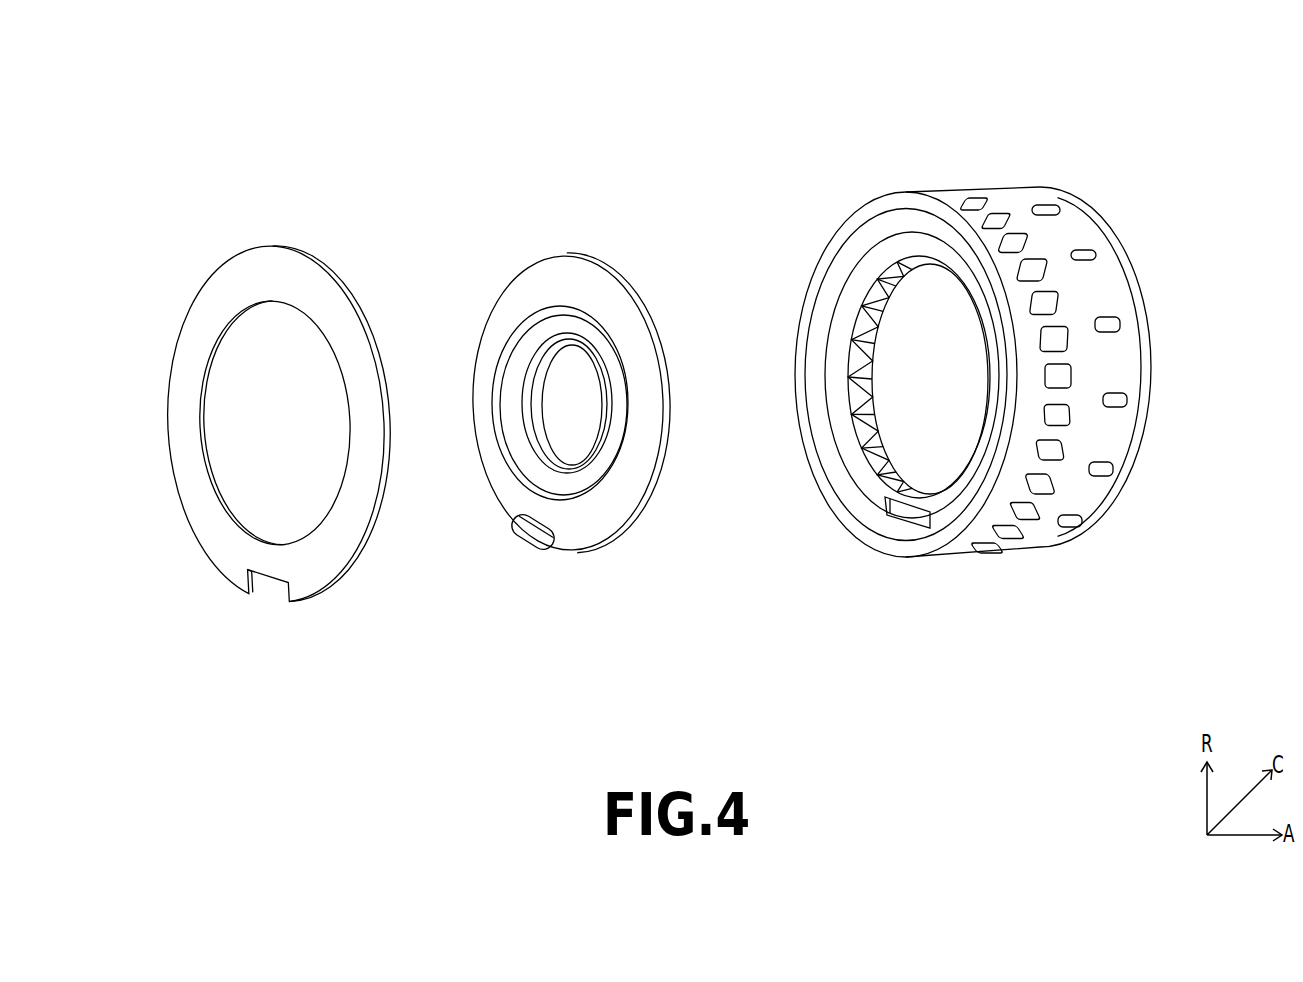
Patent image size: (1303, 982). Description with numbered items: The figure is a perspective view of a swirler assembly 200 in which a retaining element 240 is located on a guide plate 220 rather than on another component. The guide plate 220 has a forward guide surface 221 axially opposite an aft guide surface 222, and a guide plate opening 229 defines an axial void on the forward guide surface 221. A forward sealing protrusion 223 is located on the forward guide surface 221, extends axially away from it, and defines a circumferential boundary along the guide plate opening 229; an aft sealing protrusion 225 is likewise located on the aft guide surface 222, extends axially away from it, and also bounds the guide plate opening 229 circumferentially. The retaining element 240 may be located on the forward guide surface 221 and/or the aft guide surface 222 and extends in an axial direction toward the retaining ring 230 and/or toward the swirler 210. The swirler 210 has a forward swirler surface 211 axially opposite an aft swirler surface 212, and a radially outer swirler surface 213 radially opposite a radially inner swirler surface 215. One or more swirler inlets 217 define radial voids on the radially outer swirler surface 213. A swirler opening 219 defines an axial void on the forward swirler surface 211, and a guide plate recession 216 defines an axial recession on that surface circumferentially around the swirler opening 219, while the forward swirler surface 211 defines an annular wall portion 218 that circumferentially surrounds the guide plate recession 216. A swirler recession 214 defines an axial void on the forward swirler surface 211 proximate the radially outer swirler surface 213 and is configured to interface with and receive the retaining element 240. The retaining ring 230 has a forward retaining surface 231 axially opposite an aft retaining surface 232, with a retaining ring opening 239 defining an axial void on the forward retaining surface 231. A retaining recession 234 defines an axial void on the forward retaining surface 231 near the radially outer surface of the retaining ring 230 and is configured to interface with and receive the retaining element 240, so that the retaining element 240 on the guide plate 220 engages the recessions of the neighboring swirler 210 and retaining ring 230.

The swirler assembly 200 is at (236, 108).
The swirler 210 is at (1108, 186).
The forward swirler surface 211 is at (868, 207).
The aft swirler surface 212 is at (1142, 310).
The radially outer swirler surface 213 is at (1025, 198).
The swirler recession 214 is at (870, 550).
The radially inner swirler surface 215 is at (870, 374).
The guide plate recession 216 is at (936, 256).
The swirler inlets 217 is at (1096, 256).
The annular wall portion 218 is at (829, 451).
The swirler opening 219 is at (902, 330).
The guide plate 220 is at (626, 253).
The forward guide surface 221 is at (525, 287).
The aft guide surface 222 is at (670, 433).
The forward sealing protrusion 223 is at (510, 423).
The aft sealing protrusion 225 is at (557, 350).
The guide plate opening 229 is at (558, 425).
The retaining ring 230 is at (331, 232).
The forward retaining surface 231 is at (190, 363).
The aft retaining surface 232 is at (378, 337).
The retaining recession 234 is at (250, 599).
The retaining ring opening 239 is at (232, 462).
The retaining element 240 is at (543, 548).